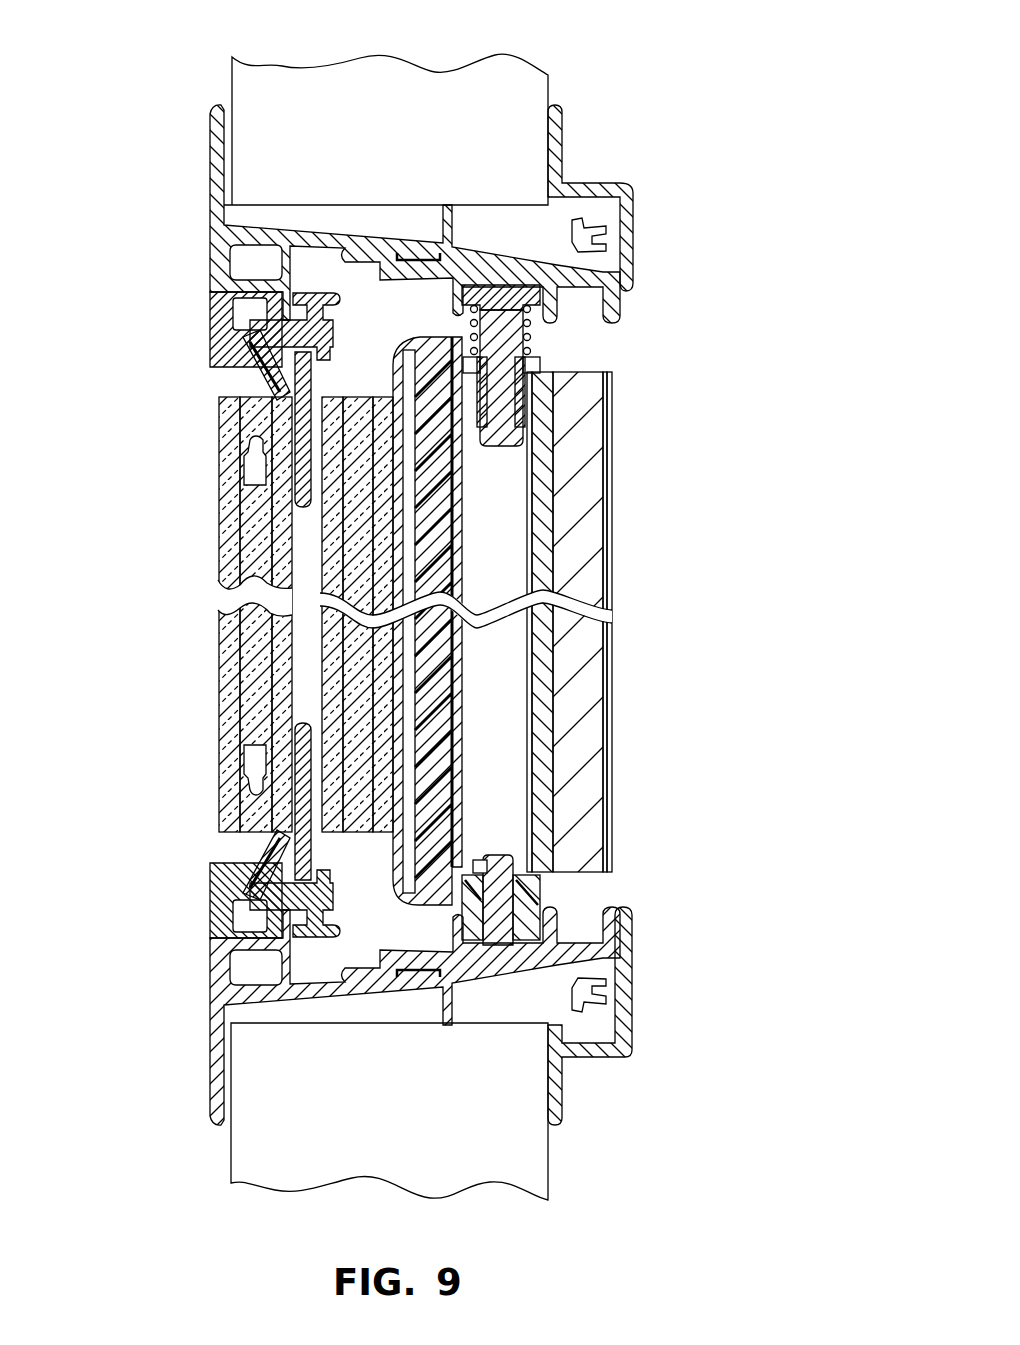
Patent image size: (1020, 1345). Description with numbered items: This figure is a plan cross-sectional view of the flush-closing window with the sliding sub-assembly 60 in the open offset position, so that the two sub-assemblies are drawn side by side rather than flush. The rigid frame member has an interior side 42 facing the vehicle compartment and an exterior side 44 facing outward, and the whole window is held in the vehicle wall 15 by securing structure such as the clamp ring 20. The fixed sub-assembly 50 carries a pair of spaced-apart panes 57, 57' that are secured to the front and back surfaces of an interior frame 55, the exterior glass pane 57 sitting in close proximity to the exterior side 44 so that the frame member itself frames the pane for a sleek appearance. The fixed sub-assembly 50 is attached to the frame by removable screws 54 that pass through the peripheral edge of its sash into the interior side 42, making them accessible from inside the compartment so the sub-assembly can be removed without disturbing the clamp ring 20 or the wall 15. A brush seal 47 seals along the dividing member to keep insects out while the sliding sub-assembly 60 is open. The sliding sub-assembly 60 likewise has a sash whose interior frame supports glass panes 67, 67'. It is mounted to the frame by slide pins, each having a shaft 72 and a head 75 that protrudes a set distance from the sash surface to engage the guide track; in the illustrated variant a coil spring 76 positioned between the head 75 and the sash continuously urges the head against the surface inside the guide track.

The vehicle wall 15 is at (548, 88).
The clamp ring 20 is at (635, 1010).
The interior side 42 is at (633, 300).
The exterior side 44 is at (210, 190).
The brush seal 47 is at (265, 380).
The fixed sub-assembly 50 is at (190, 726).
The screws 54 is at (335, 345).
The interior frame 55 is at (245, 462).
The exterior glass pane 57 is at (184, 770).
The pane 57' is at (206, 614).
The sliding sub-assembly 60 is at (318, 607).
The glass pane 67 is at (248, 614).
The glass pane 67' is at (270, 614).
The shaft 72 is at (475, 447).
The head 75 is at (470, 852).
The coil spring 76 is at (532, 330).